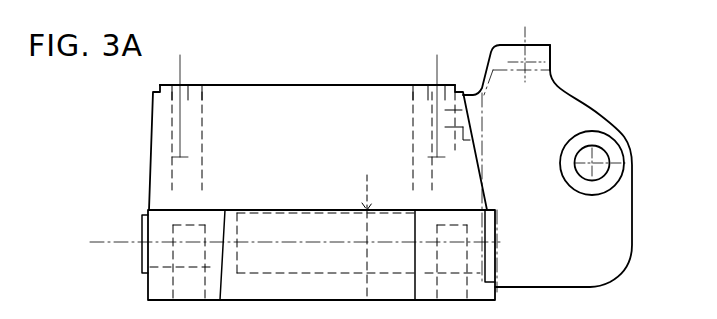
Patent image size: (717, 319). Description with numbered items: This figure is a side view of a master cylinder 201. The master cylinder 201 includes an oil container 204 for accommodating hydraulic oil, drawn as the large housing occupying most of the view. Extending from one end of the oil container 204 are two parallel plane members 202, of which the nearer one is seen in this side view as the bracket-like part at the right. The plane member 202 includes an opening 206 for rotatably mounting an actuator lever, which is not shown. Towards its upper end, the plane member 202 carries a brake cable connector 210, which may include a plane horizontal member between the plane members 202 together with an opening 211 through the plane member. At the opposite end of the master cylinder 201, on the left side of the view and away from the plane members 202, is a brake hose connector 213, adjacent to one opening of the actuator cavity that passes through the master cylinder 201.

The master cylinder 201 is at (128, 276).
The plane member 202 is at (607, 263).
The oil container 204 is at (317, 118).
The opening 206 is at (597, 158).
The brake cable connector 210 is at (547, 47).
The opening 211 is at (520, 50).
The brake hose connector 213 is at (143, 243).